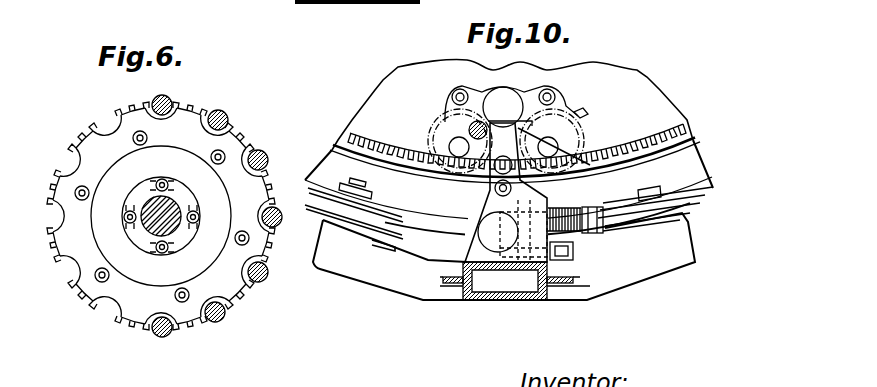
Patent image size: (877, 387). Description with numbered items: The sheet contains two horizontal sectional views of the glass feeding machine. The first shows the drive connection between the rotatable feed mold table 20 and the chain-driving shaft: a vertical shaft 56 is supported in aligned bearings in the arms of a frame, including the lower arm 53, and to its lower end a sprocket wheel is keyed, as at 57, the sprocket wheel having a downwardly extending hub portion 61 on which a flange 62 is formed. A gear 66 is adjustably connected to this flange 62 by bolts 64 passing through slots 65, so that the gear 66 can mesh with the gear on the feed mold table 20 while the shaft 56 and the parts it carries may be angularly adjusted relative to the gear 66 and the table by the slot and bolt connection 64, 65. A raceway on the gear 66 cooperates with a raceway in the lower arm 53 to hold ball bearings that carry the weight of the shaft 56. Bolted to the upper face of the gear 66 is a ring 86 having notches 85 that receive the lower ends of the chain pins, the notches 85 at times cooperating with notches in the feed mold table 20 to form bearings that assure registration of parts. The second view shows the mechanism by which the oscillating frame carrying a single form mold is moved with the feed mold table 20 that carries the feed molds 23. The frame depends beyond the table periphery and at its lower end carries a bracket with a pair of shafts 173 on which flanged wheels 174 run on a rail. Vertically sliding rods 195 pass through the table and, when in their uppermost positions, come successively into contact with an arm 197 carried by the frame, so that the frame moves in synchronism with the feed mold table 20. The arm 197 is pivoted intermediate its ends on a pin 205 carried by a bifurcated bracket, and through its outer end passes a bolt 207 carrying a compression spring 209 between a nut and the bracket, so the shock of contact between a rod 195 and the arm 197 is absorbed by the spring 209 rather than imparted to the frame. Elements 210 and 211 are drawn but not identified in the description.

In FIG. 10, the feed mold table 20 is at (670, 118).
In FIG. 10, the feed mold 23 is at (577, 115).
In FIG. 6, the lower arm 53 is at (263, 155).
In FIG. 6, the vertical shaft 56 is at (173, 203).
In FIG. 6, the key 57 is at (166, 192).
In FIG. 6, the hub portion 61 is at (147, 197).
In FIG. 6, the flange 62 is at (142, 197).
In FIG. 6, the bolts 64 is at (183, 255).
In FIG. 6, the slots 65 is at (155, 243).
In FIG. 6, the gear 66 is at (177, 280).
In FIG. 6, the notches 85 is at (248, 148).
In FIG. 6, the ring 86 is at (247, 187).
In FIG. 10, the shafts 173 is at (682, 237).
In FIG. 10, the flanged wheels 174 is at (697, 212).
In FIG. 10, the vertically sliding rod 195 is at (478, 121).
In FIG. 10, the arm 197 is at (496, 147).
In FIG. 10, the pin 205 is at (496, 190).
In FIG. 10, the bolt 207 is at (460, 265).
In FIG. 10, the spring 209 is at (572, 195).
In FIG. 10, the adjusting nut 210 is at (586, 205).
In FIG. 10, the stop 211 is at (583, 213).